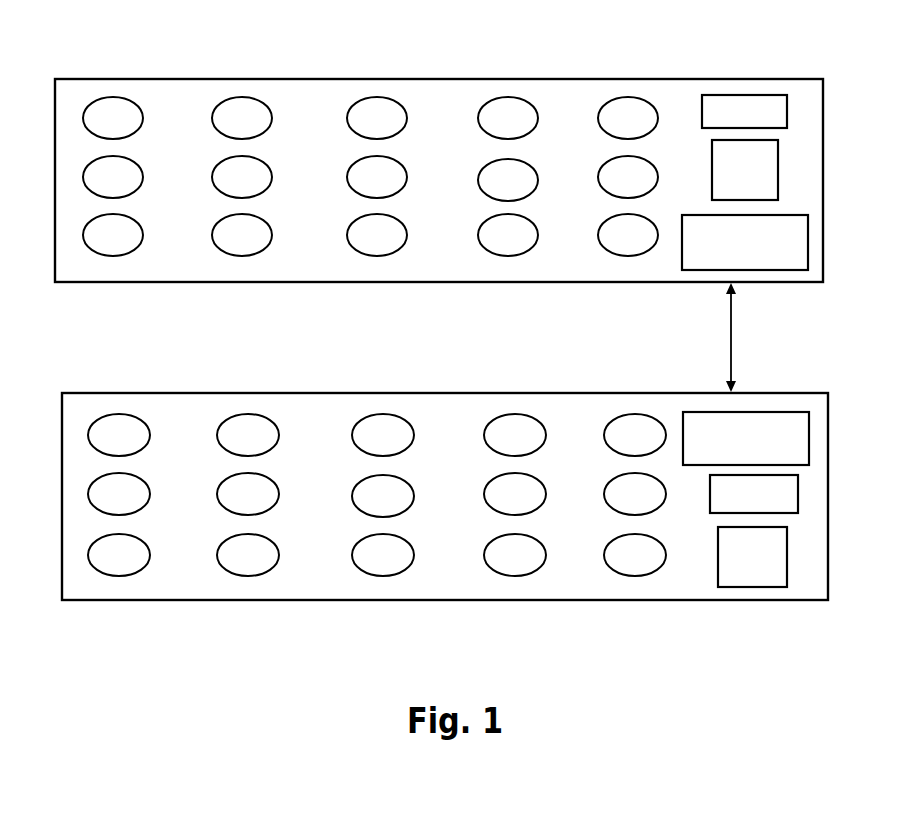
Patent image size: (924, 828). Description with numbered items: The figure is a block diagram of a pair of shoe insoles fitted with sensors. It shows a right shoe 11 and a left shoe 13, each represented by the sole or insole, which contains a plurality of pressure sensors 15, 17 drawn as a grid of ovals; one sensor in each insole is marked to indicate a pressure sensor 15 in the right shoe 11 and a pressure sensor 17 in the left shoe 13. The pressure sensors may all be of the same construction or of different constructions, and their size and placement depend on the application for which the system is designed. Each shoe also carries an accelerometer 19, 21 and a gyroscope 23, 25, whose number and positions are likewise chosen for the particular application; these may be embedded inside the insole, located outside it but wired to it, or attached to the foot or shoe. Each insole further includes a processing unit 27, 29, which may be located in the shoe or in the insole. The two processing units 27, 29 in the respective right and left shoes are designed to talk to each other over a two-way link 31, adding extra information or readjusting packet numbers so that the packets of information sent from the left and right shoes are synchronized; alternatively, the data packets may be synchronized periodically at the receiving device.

The right shoe 11 is at (180, 79).
The left shoe 13 is at (155, 393).
The pressure sensor 15 is at (533, 167).
The pressure sensor 17 is at (410, 488).
The accelerometer 19 is at (752, 95).
The accelerometer 21 is at (798, 493).
The gyroscope 23 is at (778, 170).
The gyroscope 25 is at (787, 555).
The processing unit 27 is at (808, 241).
The processing unit 29 is at (809, 432).
The communication link between devices 31 is at (732, 330).